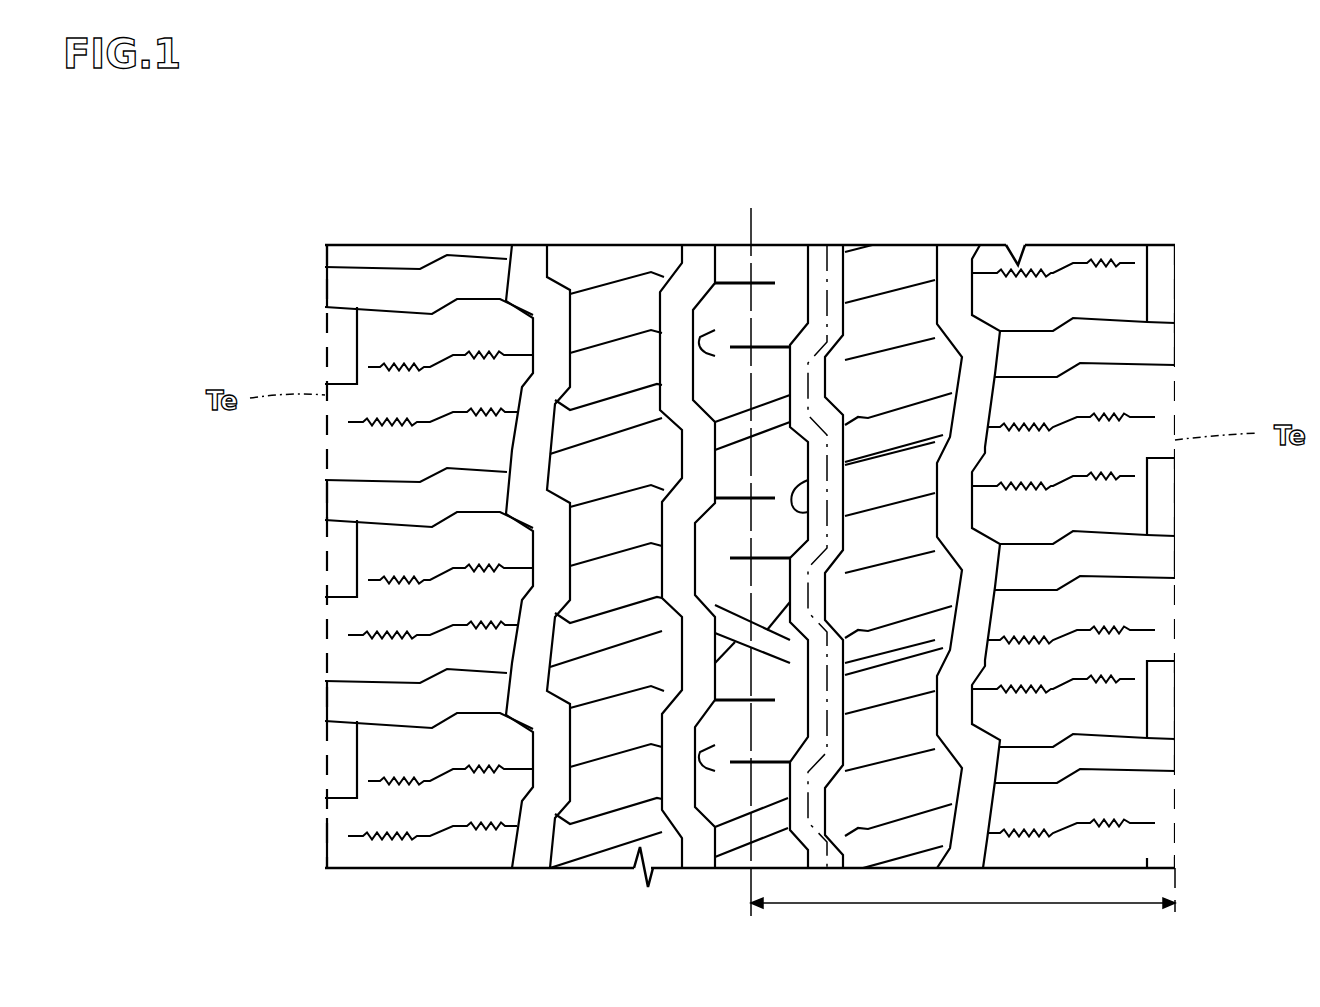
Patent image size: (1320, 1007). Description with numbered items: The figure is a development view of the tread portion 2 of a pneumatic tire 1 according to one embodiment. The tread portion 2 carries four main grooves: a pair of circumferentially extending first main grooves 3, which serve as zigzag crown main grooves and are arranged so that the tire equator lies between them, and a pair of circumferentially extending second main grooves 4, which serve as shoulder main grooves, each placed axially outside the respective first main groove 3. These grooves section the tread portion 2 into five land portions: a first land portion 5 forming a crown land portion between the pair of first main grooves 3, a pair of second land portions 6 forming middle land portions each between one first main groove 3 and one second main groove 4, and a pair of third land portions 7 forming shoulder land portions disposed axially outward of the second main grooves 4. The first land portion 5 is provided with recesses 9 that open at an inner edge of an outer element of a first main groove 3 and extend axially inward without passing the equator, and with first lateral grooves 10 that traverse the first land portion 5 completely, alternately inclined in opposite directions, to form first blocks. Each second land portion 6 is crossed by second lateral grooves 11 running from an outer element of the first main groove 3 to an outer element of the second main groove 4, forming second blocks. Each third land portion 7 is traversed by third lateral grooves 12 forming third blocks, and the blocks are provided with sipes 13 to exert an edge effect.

The pneumatic tire 1 is at (1133, 226).
The tread portion 2 is at (963, 904).
The first main grooves 3 is at (692, 260).
The second main grooves 4 is at (522, 260).
The first land portion 5 is at (783, 260).
The second land portions 6 is at (608, 260).
The third land portions 7 is at (407, 258).
The recess 9 is at (710, 345).
The first lateral grooves 10 is at (767, 418).
The second lateral grooves 11 is at (608, 425).
The third lateral grooves 12 is at (408, 292).
The sipes 13 is at (1043, 487).